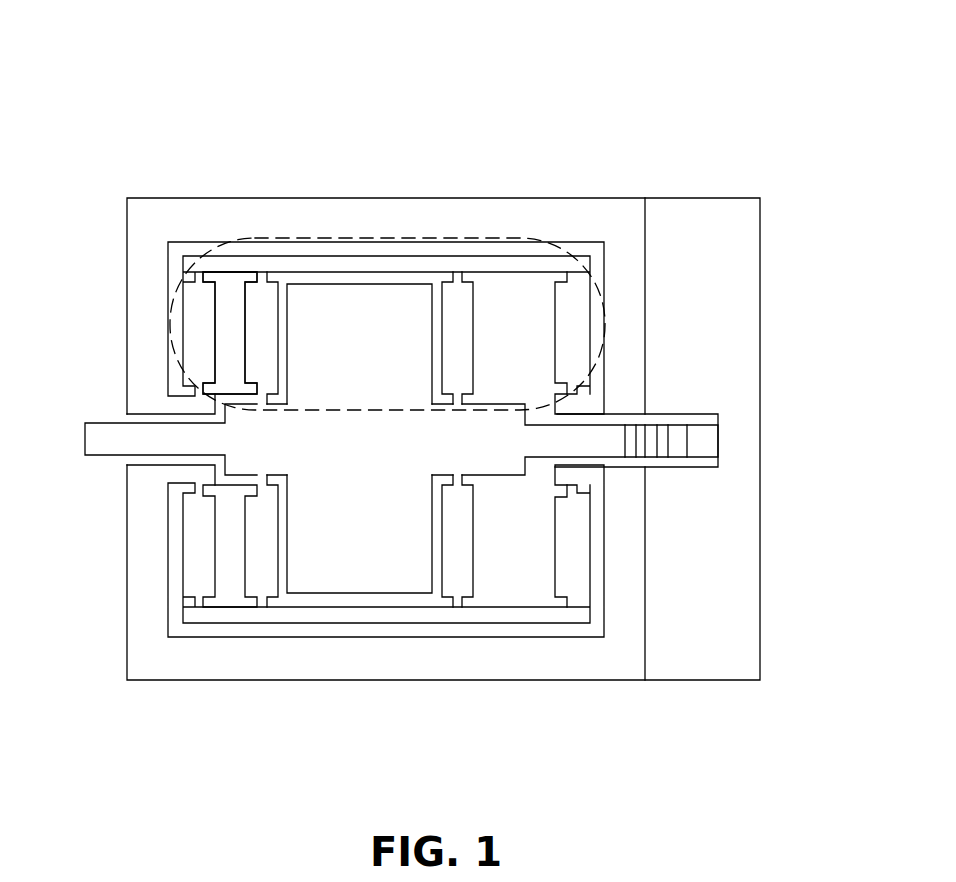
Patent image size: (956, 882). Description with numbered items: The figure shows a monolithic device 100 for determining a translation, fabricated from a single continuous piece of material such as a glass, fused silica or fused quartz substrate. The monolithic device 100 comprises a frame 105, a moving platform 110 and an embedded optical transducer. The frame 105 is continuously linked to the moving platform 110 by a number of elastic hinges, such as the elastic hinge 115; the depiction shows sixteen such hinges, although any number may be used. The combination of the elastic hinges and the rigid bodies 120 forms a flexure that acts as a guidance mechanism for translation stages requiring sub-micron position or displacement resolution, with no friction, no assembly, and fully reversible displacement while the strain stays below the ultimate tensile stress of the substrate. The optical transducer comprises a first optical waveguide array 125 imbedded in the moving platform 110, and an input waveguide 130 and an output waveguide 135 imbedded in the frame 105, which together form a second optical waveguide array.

The monolithic device 100 is at (188, 72).
The frame 105 is at (400, 161).
The moving platform 110 is at (175, 587).
The elastic hinge 115 is at (196, 211).
The rigid bodies 120 is at (123, 270).
The first optical waveguide array 125 is at (768, 417).
The input waveguide 130 is at (745, 298).
The output waveguide 135 is at (745, 542).